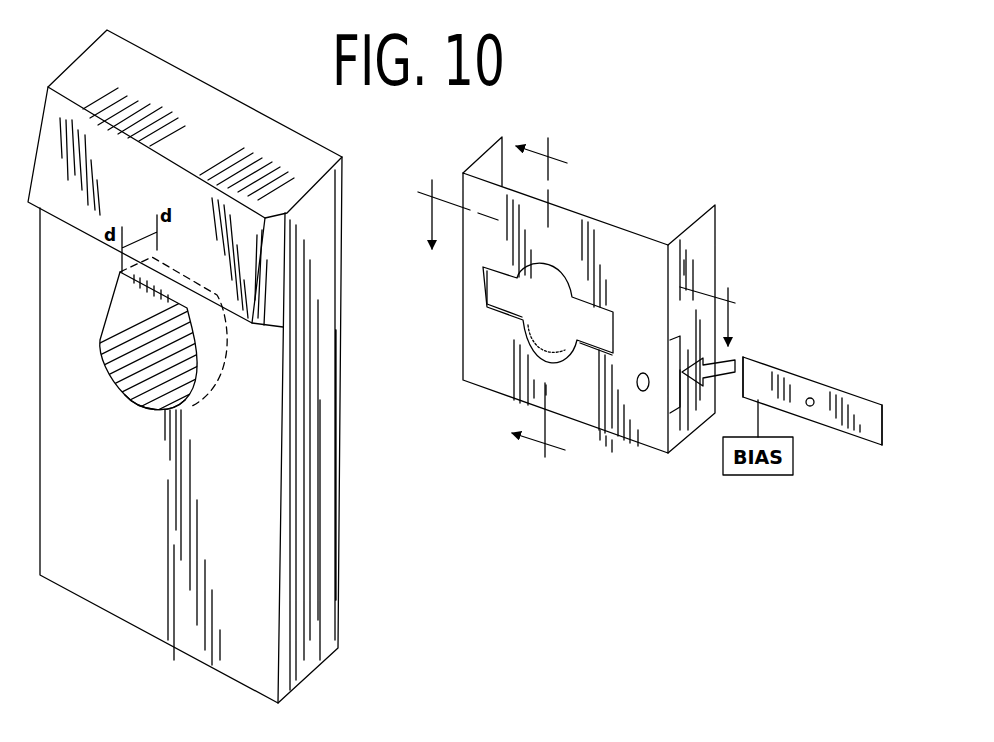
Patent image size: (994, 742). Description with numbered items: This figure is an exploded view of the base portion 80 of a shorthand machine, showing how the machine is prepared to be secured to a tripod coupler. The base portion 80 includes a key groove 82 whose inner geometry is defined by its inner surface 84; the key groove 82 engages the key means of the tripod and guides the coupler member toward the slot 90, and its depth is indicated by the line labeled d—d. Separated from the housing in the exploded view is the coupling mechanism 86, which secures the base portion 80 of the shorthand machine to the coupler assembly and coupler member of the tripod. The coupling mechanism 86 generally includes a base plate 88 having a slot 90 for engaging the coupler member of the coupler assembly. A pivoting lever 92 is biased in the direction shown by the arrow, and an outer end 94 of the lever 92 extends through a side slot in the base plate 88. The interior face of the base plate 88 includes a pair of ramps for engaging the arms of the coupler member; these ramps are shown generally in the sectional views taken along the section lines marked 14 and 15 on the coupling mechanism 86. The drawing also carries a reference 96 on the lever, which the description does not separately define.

The base portion 80 is at (82, 527).
The key groove 82 is at (143, 412).
The inner surface 84 is at (112, 357).
The coupling mechanism 86 is at (665, 208).
The base plate 88 is at (620, 405).
The slot 90 is at (502, 315).
The pivoting lever 92 is at (832, 388).
The outer end 94 is at (757, 373).
The strip end 96 is at (865, 417).
The sectional view 14 is at (579, 255).
The sectional view 15 is at (544, 309).